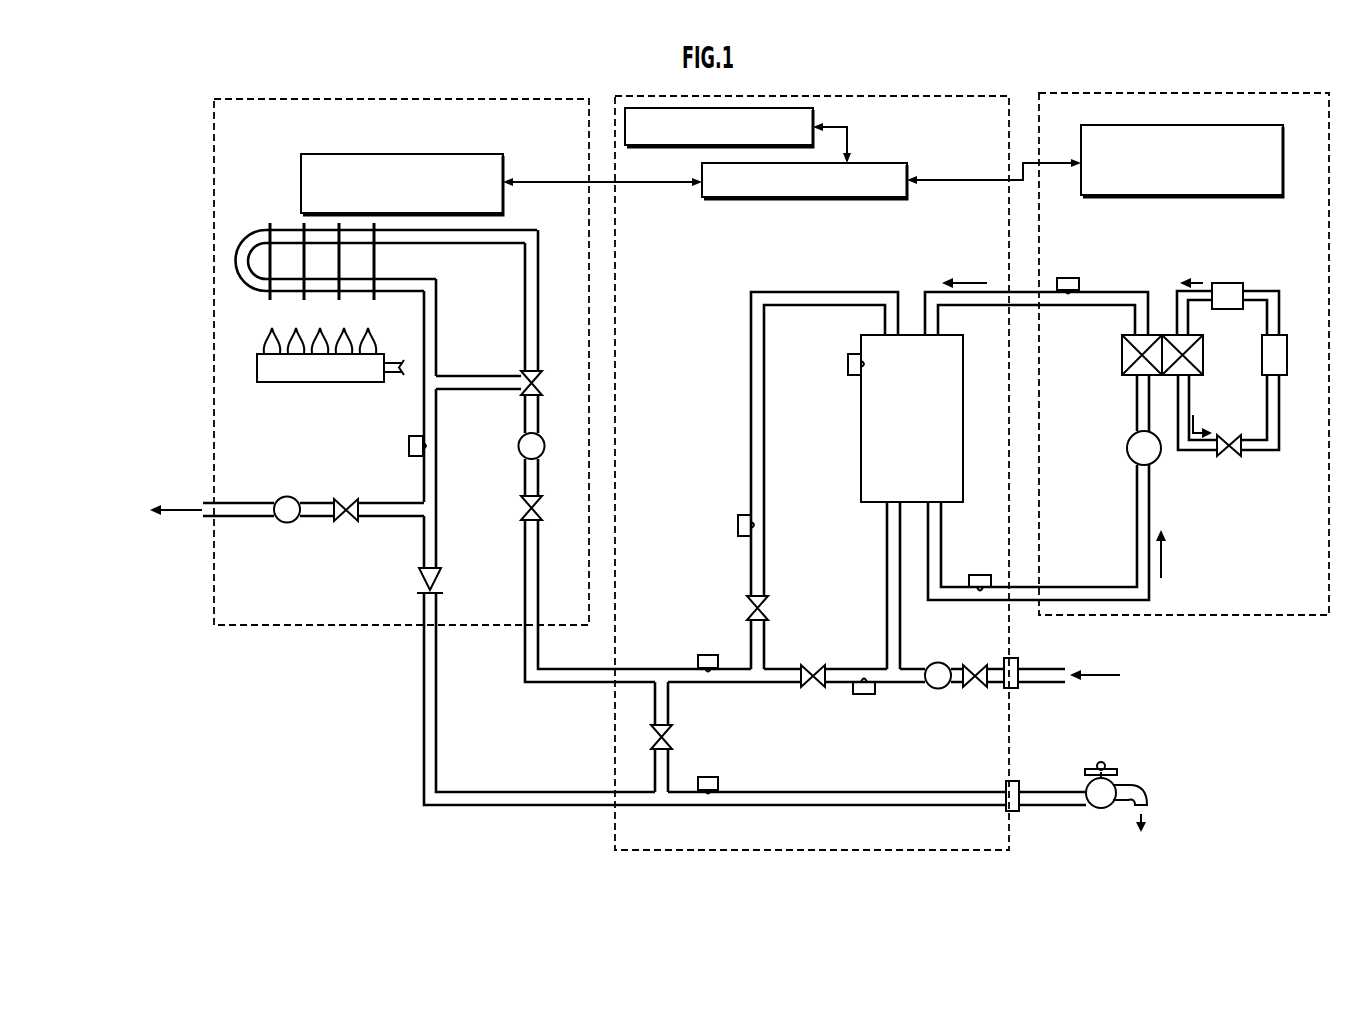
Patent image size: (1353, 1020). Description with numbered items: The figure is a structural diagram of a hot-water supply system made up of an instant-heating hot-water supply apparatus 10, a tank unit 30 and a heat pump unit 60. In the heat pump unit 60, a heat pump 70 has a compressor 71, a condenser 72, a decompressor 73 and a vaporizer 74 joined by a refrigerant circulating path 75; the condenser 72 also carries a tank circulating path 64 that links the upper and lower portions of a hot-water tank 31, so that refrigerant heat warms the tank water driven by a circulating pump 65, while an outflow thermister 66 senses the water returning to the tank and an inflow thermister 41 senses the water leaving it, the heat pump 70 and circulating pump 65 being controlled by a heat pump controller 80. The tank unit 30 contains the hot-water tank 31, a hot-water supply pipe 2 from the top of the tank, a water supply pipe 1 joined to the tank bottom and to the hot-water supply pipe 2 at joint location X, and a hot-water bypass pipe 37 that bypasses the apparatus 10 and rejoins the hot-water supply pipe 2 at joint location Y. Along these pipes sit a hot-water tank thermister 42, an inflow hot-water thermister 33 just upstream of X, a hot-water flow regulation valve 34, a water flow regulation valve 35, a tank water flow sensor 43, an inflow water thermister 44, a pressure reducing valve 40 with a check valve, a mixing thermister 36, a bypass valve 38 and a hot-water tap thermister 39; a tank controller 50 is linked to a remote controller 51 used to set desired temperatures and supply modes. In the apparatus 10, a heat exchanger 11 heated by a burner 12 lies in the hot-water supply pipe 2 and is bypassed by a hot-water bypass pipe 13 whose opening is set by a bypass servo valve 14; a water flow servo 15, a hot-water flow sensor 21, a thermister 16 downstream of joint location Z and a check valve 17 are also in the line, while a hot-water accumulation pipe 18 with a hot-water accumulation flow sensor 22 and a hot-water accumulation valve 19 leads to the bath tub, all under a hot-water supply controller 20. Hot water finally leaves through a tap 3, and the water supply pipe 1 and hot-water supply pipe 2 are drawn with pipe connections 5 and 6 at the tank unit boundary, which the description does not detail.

The water supply pipe 1 is at (917, 683).
The hot-water supply pipe 2 is at (560, 684).
The hot water faucet 3 is at (1129, 785).
The pipe joint 5 is at (1011, 688).
The pipe joint 6 is at (1014, 812).
The hot-water supply apparatus 10 is at (467, 99).
The heat exchanger 11 is at (270, 226).
The burner 12 is at (336, 384).
The hot-water bypass pipe 13 is at (488, 376).
The bypass servo valve 14 is at (542, 383).
The water flow servo 15 is at (542, 508).
The thermister 16 is at (408, 446).
The check valve 17 is at (441, 580).
The hot-water accumulation pipe 18 is at (393, 517).
The hot-water accumulation valve 19 is at (346, 521).
The hot-water supply controller 20 is at (466, 154).
The hot-water flow sensor 21 is at (545, 446).
The hot-water accumulation flow sensor 22 is at (287, 523).
The tank unit 30 is at (869, 96).
The hot-water tank 31 is at (861, 408).
The inflow hot-water thermister 33 is at (737, 525).
The hot-water flow regulation valve 34 is at (768, 609).
The water flow regulation valve 35 is at (814, 663).
The mixing thermister 36 is at (707, 654).
The hot-water bypass pipe 37 is at (669, 699).
The bypass valve 38 is at (672, 735).
The hot-water tap thermister 39 is at (707, 776).
The pressure reducing valve 40 is at (977, 663).
The inflow thermister 41 is at (981, 574).
The hot-water tank thermister 42 is at (847, 364).
The tank water flow sensor 43 is at (938, 662).
The inflow water thermister 44 is at (864, 695).
The tank controller 50 is at (868, 164).
The remote controller 51 is at (636, 145).
The heat pump unit 60 is at (1248, 93).
The tank circulating path 64 is at (1116, 290).
The circulating pump 65 is at (1160, 459).
The outflow thermister 66 is at (1069, 277).
The heat pump 70 is at (1260, 262).
The compressor 71 is at (1227, 282).
The condenser 72 is at (1204, 355).
The decompressor 73 is at (1227, 456).
The vaporizer 74 is at (1288, 355).
The refrigerant circulating path 75 is at (1270, 452).
The heat pump controller 80 is at (1246, 126).
The joint location X is at (761, 684).
The joint location Y is at (661, 806).
The joint location Z is at (437, 384).